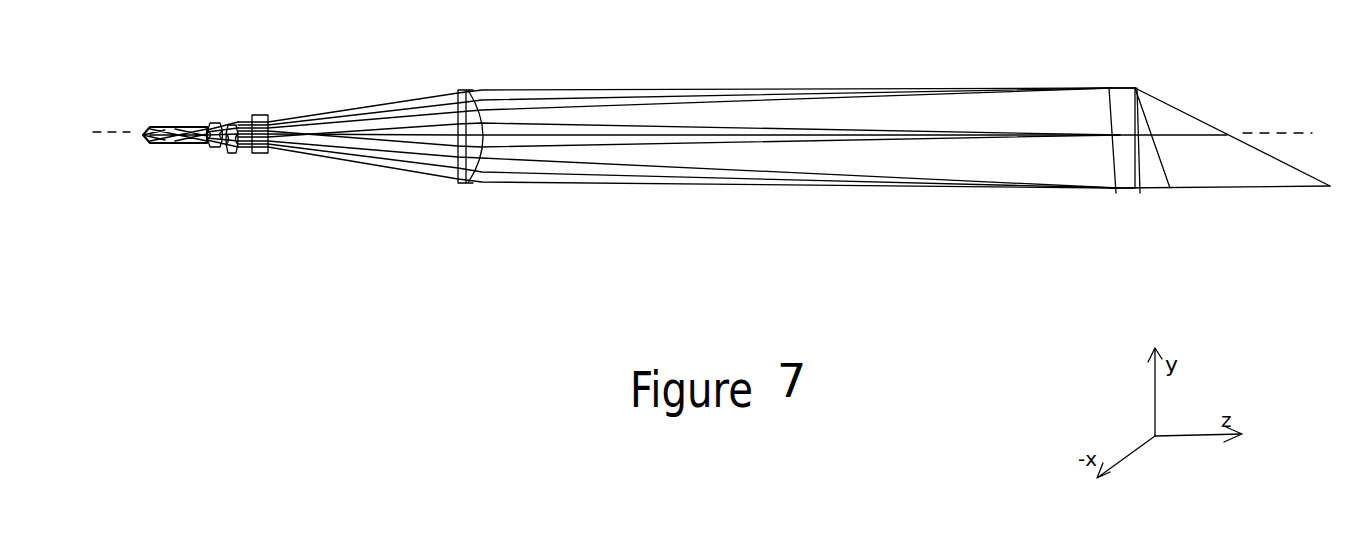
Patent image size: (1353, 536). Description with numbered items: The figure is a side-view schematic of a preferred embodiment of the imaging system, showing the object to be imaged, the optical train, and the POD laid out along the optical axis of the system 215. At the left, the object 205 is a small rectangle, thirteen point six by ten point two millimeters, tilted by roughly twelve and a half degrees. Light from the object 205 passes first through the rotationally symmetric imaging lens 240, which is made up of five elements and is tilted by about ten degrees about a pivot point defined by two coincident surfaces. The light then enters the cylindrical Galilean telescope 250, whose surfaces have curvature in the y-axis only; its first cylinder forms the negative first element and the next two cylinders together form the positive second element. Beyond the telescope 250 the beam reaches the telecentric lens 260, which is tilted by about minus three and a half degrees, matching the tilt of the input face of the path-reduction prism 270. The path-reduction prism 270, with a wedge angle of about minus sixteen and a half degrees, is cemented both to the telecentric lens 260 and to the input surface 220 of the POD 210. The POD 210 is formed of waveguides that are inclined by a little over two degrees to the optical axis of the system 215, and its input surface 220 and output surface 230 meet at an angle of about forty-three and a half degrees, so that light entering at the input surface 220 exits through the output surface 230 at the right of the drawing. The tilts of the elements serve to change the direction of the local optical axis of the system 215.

The object 205 is at (143, 132).
The POD 210 is at (1188, 139).
The optical axis of the system 215 is at (100, 140).
The input surface 220 is at (1163, 175).
The output surface 230 is at (1182, 110).
The rotationally symmetric imaging lens 240 is at (240, 166).
The cylindrical Galilean telescope 250 is at (485, 188).
The telecentric lens 260 is at (1110, 178).
The path-reduction prism 270 is at (1153, 173).